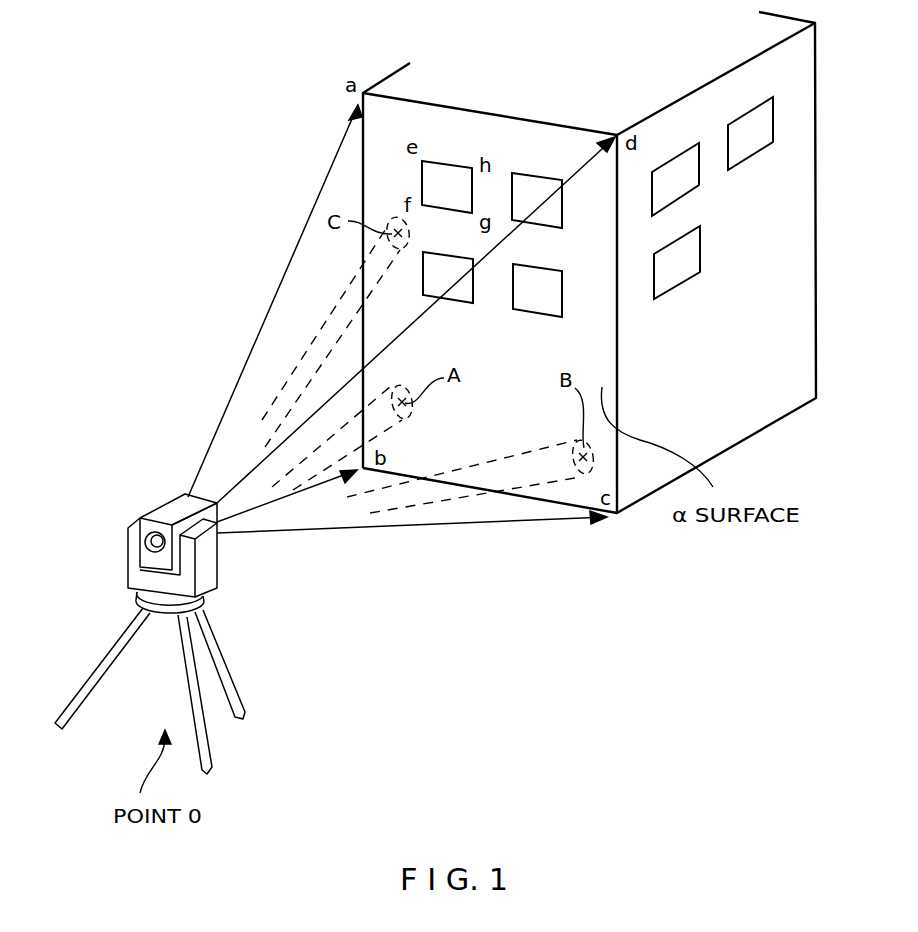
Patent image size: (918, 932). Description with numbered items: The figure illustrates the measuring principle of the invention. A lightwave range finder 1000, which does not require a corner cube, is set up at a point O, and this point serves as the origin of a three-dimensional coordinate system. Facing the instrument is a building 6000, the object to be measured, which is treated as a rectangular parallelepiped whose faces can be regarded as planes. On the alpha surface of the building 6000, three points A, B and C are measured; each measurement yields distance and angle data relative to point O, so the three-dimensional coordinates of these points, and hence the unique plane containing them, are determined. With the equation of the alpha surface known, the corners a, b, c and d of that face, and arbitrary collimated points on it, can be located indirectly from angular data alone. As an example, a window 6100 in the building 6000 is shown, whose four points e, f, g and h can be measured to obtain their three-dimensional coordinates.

The building 6000 is at (800, 381).
The window 6100 is at (445, 173).
The lightwave range finder 1000 is at (218, 553).